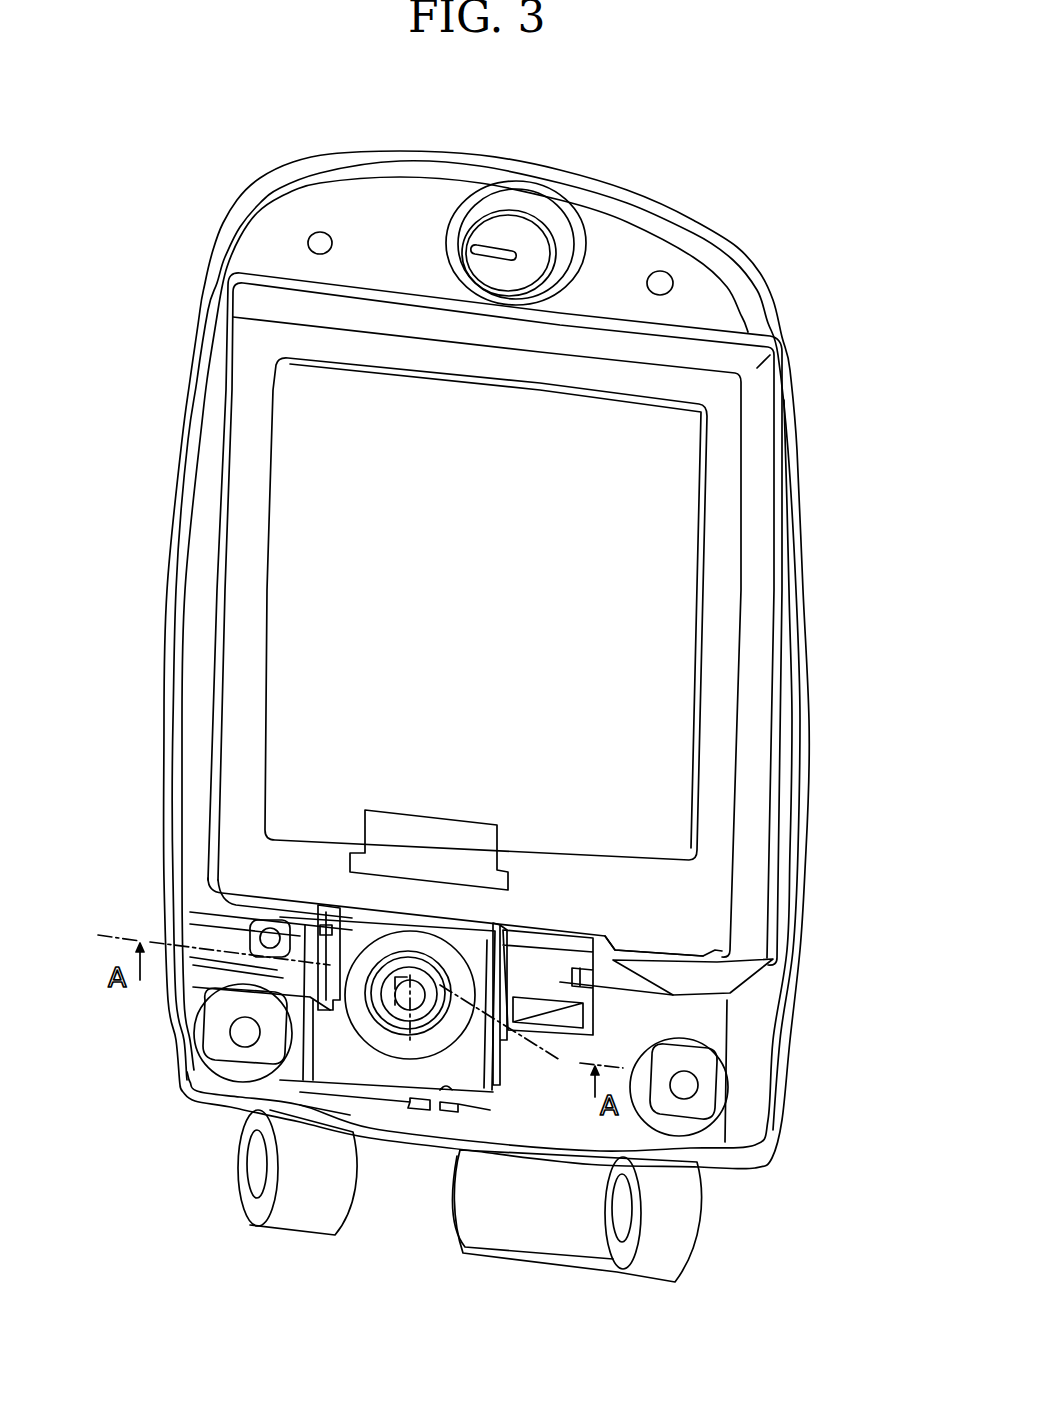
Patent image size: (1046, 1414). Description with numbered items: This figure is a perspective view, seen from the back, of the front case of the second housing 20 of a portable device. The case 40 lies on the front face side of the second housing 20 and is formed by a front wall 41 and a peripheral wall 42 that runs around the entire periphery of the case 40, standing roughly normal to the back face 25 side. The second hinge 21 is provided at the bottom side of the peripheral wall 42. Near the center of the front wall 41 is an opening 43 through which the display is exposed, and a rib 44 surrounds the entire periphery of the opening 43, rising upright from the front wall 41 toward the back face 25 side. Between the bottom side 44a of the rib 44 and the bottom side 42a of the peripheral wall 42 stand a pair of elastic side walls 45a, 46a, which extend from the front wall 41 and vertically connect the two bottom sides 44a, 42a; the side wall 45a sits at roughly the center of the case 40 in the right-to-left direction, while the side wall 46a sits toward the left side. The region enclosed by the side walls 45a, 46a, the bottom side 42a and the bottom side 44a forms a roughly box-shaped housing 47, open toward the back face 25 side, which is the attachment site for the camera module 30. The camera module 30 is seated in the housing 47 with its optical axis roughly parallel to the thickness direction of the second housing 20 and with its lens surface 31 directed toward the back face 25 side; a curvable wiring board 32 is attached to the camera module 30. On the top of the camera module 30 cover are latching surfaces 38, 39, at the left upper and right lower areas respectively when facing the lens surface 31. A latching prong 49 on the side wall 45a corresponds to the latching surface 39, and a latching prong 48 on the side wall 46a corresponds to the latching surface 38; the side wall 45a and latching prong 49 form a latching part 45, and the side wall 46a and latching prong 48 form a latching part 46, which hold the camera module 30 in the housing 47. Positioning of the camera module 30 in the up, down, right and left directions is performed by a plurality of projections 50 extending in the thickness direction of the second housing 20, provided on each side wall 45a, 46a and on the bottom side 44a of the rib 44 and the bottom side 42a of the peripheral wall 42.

The second housing 20 is at (452, 639).
The case 40 is at (238, 193).
The back face 25 is at (377, 190).
The front wall 41 is at (248, 377).
The peripheral wall 42 is at (187, 440).
The bottom side of peripheral wall 42a is at (370, 1115).
The opening 43 is at (470, 535).
The rib 44 is at (207, 509).
The bottom side of rib 44a is at (606, 934).
The box-shaped housing 47 is at (445, 932).
The wiring board 32 is at (450, 830).
The lens surface 31 is at (423, 983).
The latching surface 38 is at (340, 935).
The camera module 30 is at (380, 1095).
The latching surface 39 is at (508, 1080).
The latching part 46 is at (206, 988).
The latching prong 48 is at (297, 920).
The side wall 46a is at (288, 1076).
The latching part 45 is at (615, 979).
The side wall 45a is at (502, 945).
The latching prong 49 is at (556, 1070).
The projections 50 is at (325, 915).
The second hinge 21 is at (293, 1227).